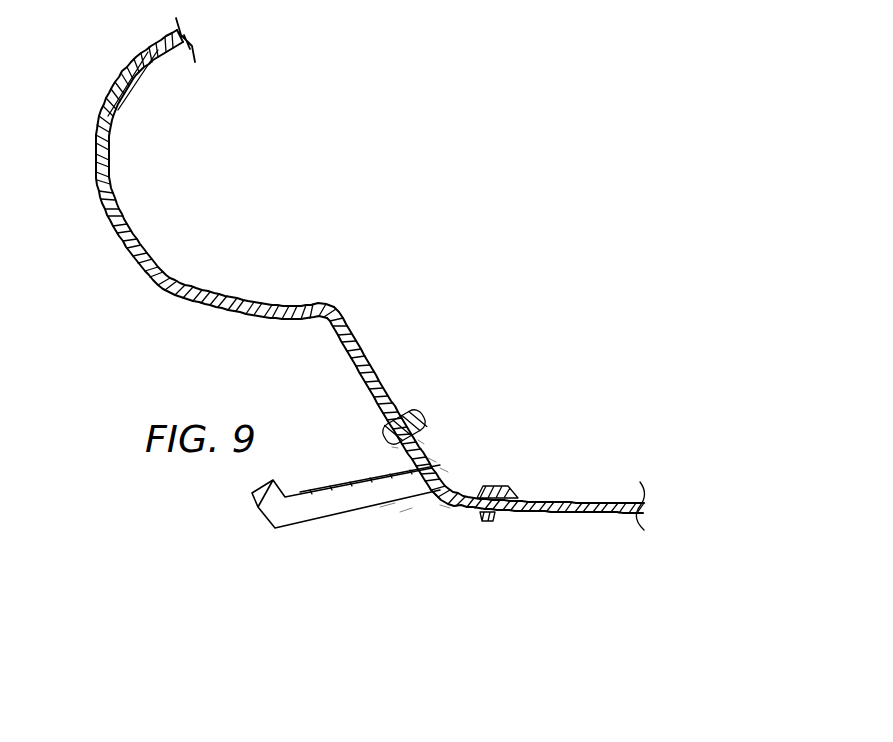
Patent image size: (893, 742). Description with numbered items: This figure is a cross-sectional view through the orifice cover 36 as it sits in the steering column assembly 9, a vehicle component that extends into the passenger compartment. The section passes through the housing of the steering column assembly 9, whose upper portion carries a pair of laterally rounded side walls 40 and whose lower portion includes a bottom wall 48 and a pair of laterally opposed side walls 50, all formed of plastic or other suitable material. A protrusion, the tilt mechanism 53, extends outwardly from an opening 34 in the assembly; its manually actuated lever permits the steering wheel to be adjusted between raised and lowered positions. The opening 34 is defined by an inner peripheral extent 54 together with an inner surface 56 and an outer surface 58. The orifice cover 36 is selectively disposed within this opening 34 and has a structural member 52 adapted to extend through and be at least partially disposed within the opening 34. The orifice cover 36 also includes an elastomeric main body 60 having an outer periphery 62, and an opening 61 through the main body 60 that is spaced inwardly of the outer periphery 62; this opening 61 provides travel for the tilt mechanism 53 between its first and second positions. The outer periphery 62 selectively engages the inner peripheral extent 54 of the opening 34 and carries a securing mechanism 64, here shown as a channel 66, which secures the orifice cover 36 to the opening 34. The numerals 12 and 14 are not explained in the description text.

The steering column assembly 9 is at (430, 180).
The base panel 12 is at (638, 484).
The inclined flange 14 is at (352, 363).
The opening 34 is at (407, 520).
The orifice cover 36 is at (428, 458).
The laterally rounded side walls 40 is at (107, 100).
The bottom wall 48 is at (553, 513).
The laterally opposed side walls 50 is at (188, 298).
The structural member 52 is at (442, 468).
The tilt mechanism 53 is at (255, 502).
The inner peripheral extent 54 is at (420, 447).
The inner surface 56 is at (402, 407).
The outer surface 58 is at (390, 430).
The elastomeric main body 60 is at (447, 505).
The opening 61 is at (390, 504).
The outer periphery 62 is at (420, 440).
The securing mechanism 64 is at (385, 443).
The channel 66 is at (491, 511).